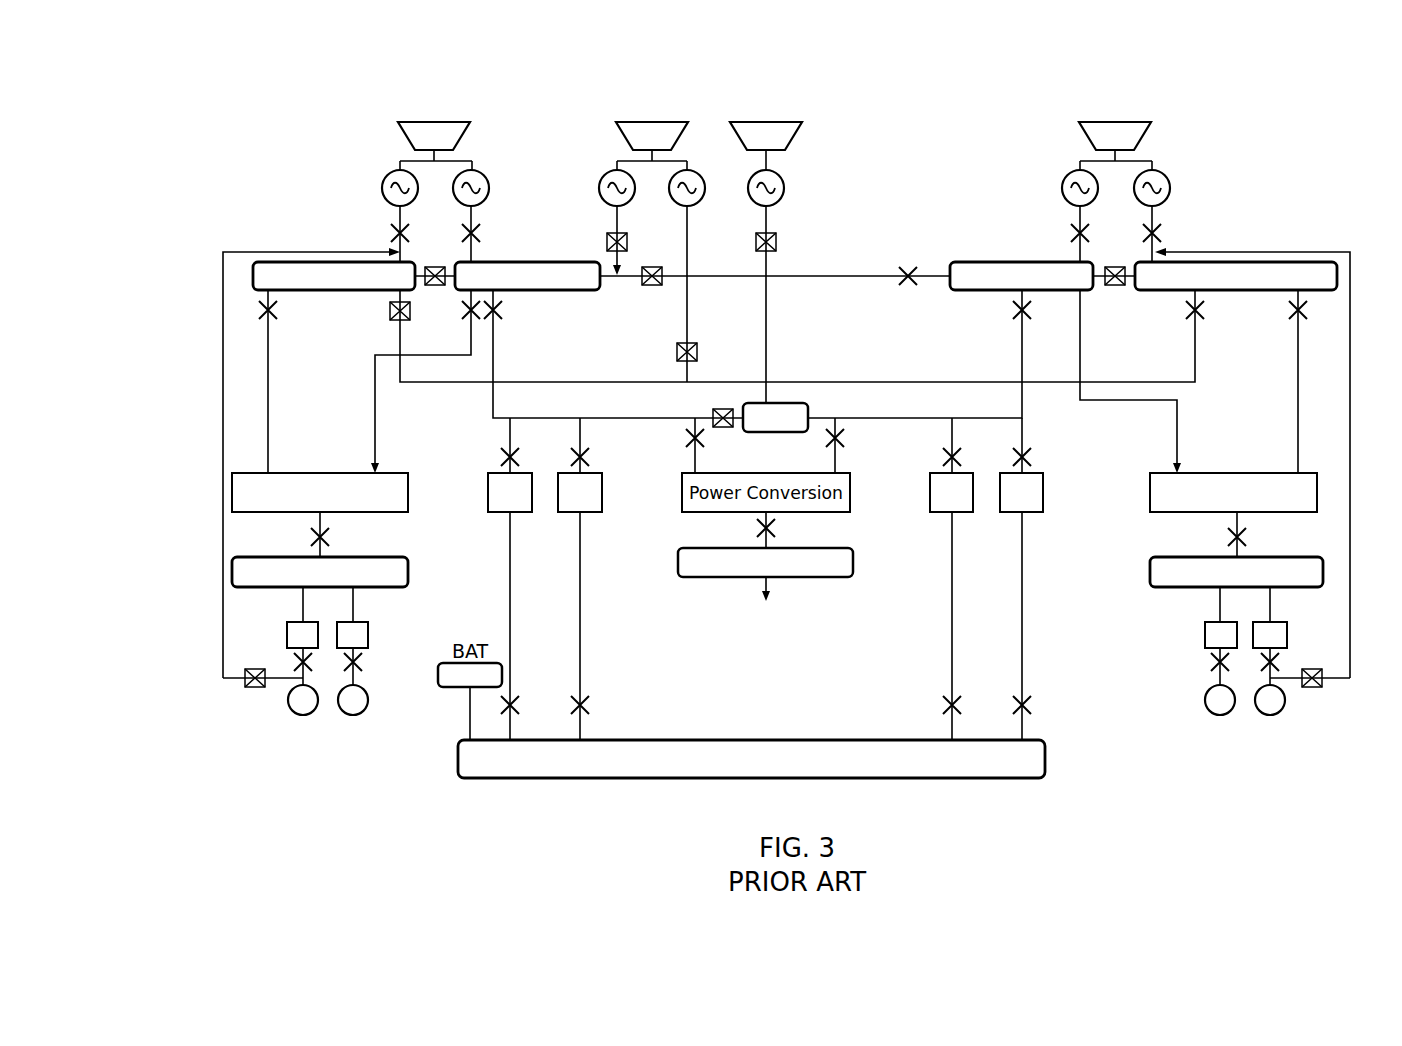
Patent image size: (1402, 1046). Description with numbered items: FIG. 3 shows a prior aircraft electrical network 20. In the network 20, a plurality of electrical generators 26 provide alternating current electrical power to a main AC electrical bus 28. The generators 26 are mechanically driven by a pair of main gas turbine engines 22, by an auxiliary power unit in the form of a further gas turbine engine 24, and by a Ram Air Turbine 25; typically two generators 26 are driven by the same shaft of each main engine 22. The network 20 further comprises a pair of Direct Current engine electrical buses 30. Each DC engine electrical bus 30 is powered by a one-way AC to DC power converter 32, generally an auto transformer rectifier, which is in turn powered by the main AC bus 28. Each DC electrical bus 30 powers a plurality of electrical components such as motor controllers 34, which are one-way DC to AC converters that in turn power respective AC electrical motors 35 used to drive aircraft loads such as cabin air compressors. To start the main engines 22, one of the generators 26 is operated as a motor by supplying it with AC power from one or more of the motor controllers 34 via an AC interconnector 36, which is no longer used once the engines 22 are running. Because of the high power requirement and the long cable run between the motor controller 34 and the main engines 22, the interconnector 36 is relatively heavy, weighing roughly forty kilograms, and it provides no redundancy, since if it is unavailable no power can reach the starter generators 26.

The aircraft electrical network 20 is at (909, 788).
The main gas turbine engine 22 is at (437, 121).
The auxiliary power unit 24 is at (652, 121).
The ram air turbine 25 is at (767, 121).
The electrical generator 26 is at (490, 188).
The main AC electrical bus 28 is at (836, 344).
The DC engine electrical bus 30 is at (249, 594).
The AC to DC power converter 32 is at (232, 572).
The motor controller 34 is at (318, 633).
The AC electrical motor 35 is at (305, 715).
The AC interconnector 36 is at (222, 320).